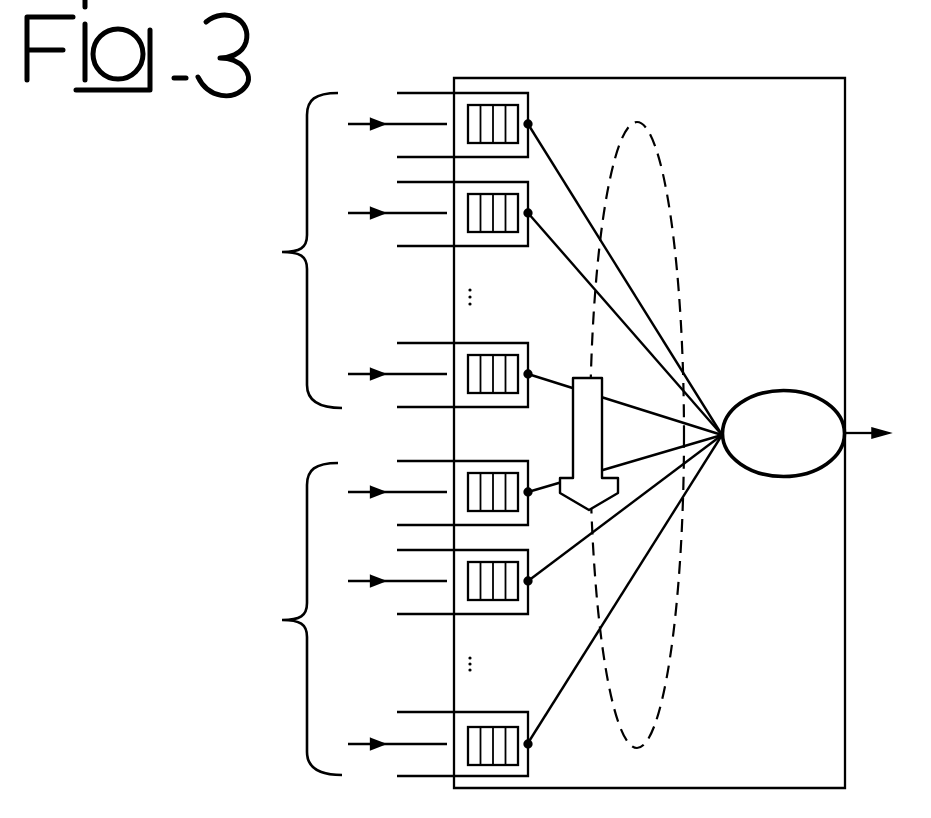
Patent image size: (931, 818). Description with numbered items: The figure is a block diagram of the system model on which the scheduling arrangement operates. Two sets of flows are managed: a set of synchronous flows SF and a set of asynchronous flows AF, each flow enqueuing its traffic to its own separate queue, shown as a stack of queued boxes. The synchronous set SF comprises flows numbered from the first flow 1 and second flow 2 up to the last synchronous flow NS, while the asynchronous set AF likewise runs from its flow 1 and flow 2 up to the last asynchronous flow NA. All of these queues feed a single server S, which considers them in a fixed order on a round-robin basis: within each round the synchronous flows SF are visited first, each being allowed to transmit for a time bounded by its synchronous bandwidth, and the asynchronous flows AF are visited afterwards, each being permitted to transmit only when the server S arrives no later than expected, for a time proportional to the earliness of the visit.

The synchronous flows SF is at (281, 252).
The asynchronous flows AF is at (281, 620).
The first flow 1 is at (440, 309).
The second flow 2 is at (440, 398).
The number of synchronous flows NS is at (440, 375).
The number of asynchronous flows NA is at (440, 744).
The server S is at (777, 405).